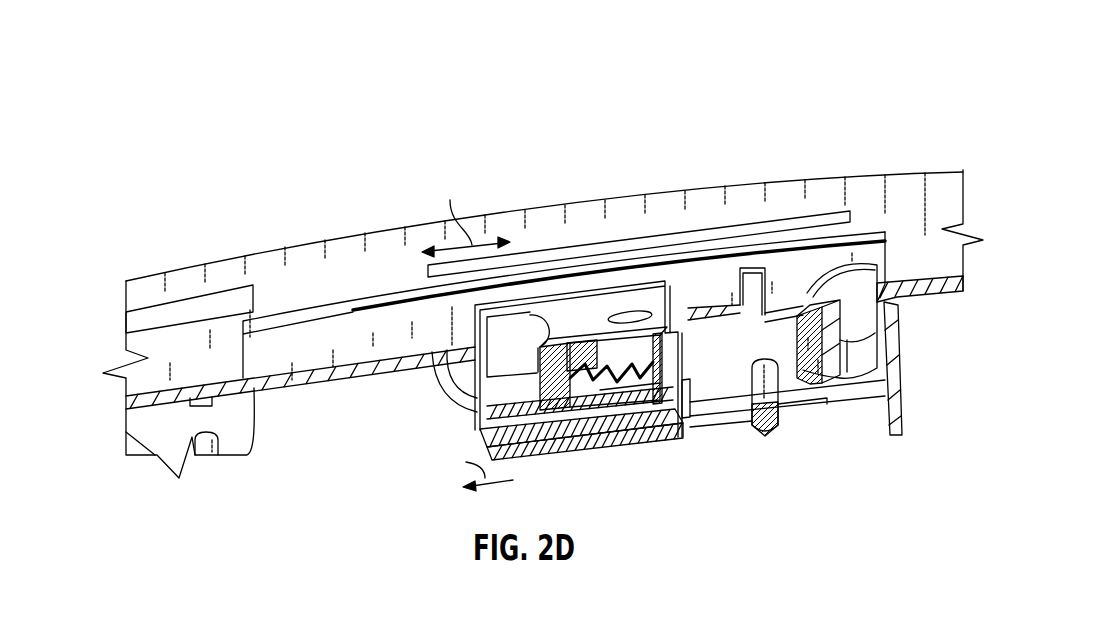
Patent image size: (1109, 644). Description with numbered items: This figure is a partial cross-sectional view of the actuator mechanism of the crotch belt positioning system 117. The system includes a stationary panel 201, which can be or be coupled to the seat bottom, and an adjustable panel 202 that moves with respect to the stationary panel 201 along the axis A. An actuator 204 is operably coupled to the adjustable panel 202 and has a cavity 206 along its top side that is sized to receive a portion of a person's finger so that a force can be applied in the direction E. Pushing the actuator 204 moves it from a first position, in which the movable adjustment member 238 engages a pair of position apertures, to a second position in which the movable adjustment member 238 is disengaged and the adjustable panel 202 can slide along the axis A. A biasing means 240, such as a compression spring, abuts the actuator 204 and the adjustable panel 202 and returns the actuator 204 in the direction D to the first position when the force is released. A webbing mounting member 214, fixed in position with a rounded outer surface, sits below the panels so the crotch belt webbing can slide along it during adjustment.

The crotch belt positioning system 117 is at (525, 267).
The stationary panel 201 is at (148, 357).
The adjustable panel 202 is at (303, 333).
The actuator 204 is at (585, 320).
The cavity 206 is at (582, 322).
The webbing mounting member 214 is at (207, 433).
The movable adjustment member 238 is at (765, 365).
The biasing means 240 is at (623, 388).